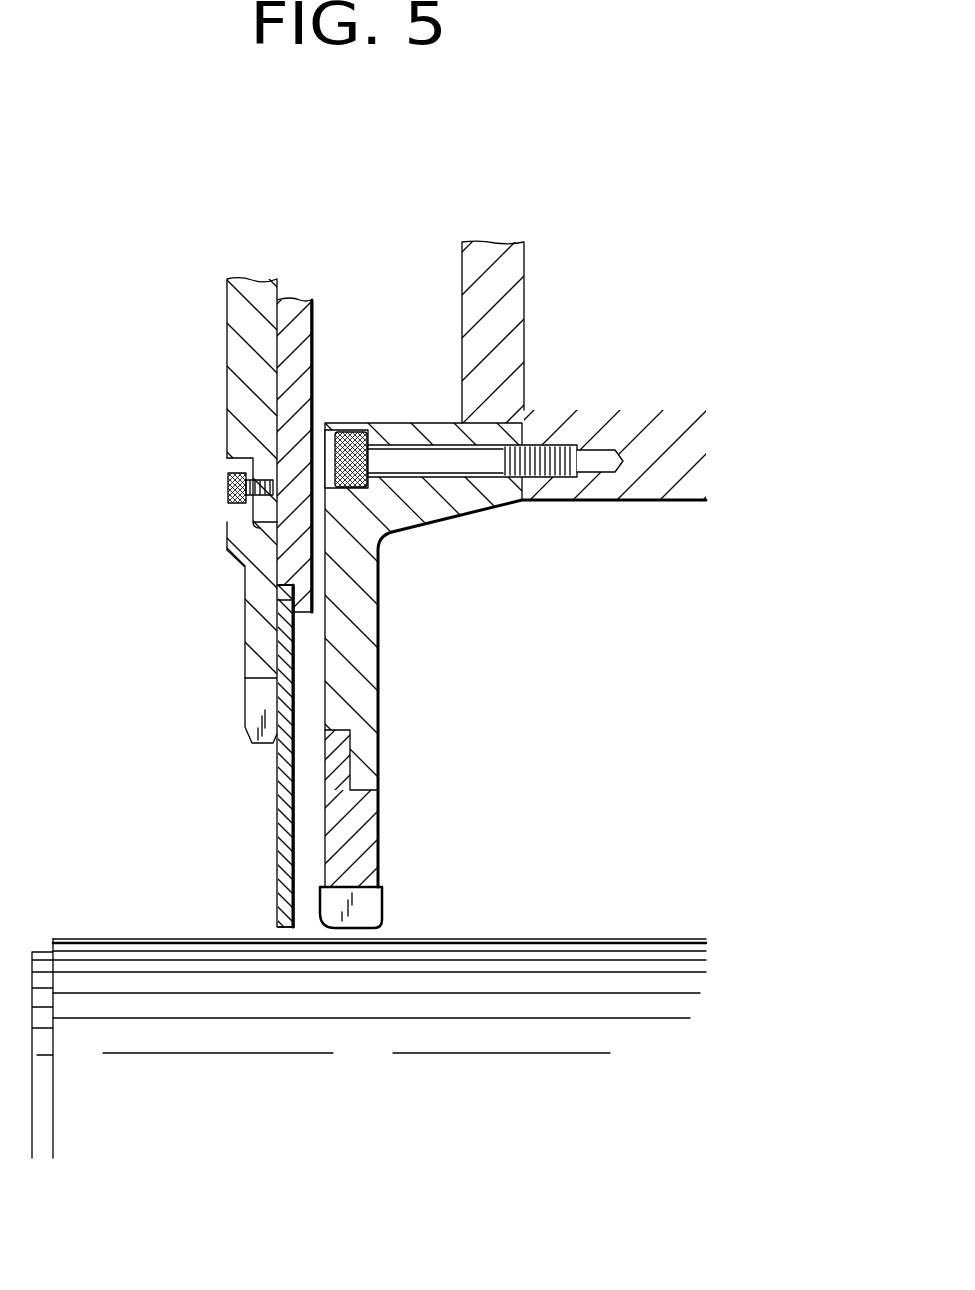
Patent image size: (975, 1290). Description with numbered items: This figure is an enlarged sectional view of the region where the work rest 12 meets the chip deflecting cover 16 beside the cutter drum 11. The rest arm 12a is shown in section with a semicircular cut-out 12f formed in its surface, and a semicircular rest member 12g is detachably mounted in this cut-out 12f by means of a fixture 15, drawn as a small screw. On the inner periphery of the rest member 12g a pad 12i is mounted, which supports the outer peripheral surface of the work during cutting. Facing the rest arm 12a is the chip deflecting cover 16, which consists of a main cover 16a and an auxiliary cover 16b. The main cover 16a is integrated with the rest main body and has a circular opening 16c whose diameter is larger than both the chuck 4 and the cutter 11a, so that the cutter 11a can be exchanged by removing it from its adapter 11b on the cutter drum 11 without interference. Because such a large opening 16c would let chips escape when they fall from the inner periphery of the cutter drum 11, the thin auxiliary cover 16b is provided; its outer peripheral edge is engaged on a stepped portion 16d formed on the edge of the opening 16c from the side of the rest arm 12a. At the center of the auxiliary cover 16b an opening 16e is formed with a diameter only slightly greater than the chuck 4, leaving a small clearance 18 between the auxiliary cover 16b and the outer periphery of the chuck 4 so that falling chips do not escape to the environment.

The chuck 4 is at (138, 972).
The cutter drum 11 is at (462, 333).
The cutter 11a is at (360, 848).
The adapter 11b is at (443, 498).
The rest 12 is at (222, 352).
The rest arm 12a is at (245, 413).
The semicircular cut-out 12f is at (257, 530).
The rest member 12g is at (253, 576).
The pad 12i is at (250, 727).
The fixture 15 is at (231, 484).
The chip deflecting cover 16 is at (335, 603).
The main cover 16a is at (300, 566).
The auxiliary cover 16b is at (293, 705).
The circular opening 16c is at (290, 633).
The stepped portion 16d is at (282, 600).
The opening 16e is at (280, 926).
The clearance 18 is at (285, 932).